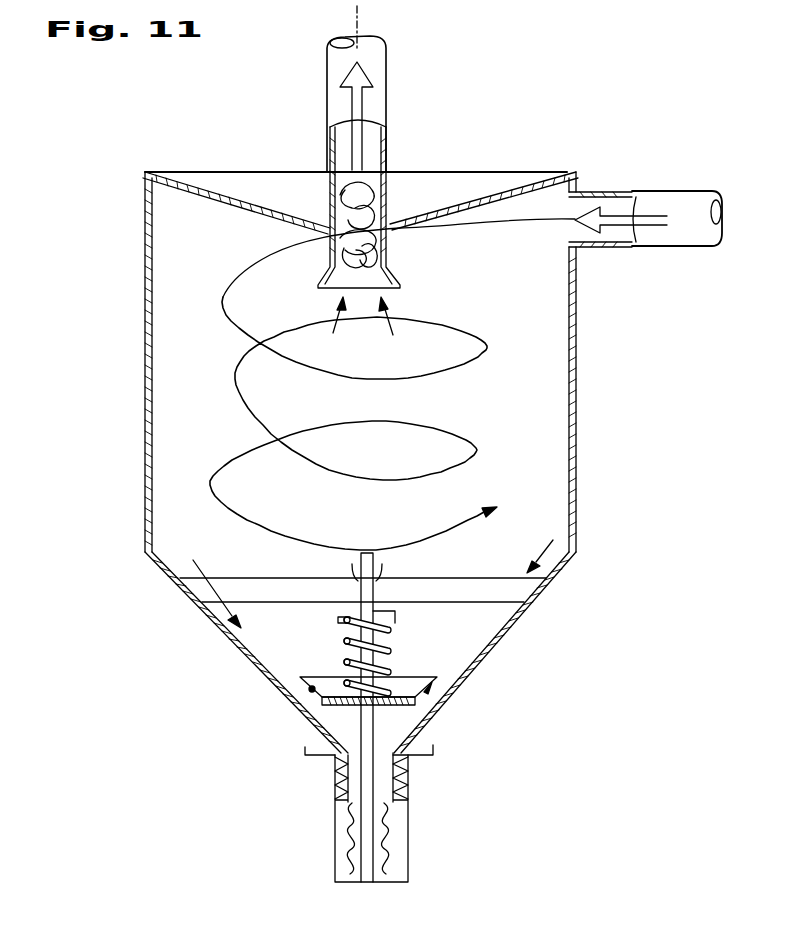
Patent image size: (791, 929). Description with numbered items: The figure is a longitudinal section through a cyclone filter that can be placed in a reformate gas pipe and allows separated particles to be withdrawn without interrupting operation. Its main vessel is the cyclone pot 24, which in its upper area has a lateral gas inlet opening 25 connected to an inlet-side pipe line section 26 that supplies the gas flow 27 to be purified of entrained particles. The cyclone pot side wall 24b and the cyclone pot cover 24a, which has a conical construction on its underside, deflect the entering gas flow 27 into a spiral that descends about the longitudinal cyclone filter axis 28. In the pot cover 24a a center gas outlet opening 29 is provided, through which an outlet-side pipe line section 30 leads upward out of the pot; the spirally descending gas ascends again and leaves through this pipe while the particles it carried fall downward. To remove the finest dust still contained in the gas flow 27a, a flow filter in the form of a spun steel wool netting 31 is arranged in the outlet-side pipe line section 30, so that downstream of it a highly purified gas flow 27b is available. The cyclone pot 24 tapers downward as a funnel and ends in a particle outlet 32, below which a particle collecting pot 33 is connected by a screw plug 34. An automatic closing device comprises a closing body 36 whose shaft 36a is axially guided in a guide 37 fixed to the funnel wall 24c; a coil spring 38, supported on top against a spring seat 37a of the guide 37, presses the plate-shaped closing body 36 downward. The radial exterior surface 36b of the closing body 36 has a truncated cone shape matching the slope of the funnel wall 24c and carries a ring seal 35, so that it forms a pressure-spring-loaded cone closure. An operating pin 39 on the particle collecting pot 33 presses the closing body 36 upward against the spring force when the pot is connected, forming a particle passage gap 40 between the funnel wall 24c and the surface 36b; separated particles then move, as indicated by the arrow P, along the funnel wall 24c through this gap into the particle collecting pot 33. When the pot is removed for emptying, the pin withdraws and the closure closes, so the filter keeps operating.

The cyclone pot 24 is at (545, 380).
The cyclone pot cover 24a is at (470, 178).
The cyclone pot side wall 24b is at (146, 250).
The funnel wall 24c is at (534, 616).
The gas inlet opening 25 is at (570, 201).
The inlet-side pipe line section 26 is at (670, 202).
The gas flow 27 is at (620, 222).
The gas flow 27a is at (386, 318).
The gas flow 27b is at (346, 140).
The longitudinal cyclone filter axis 28 is at (357, 22).
The gas outlet opening 29 is at (388, 166).
The outlet-side pipe line section 30 is at (384, 67).
The spun steel wool netting 31 is at (378, 247).
The particle outlet 32 is at (386, 788).
The particle collecting pot 33 is at (409, 845).
The screw plug 34 is at (436, 751).
The ring seal 35 is at (431, 685).
The closing body 36 is at (337, 707).
The shaft 36a is at (396, 631).
The radial exterior surface 36b is at (302, 689).
The guide 37 is at (378, 591).
The spring seat 37a is at (356, 616).
The coil spring 38 is at (393, 671).
The operating pin 39 is at (366, 807).
The particle passage gap 40 is at (444, 683).
The arrow P is at (200, 590).